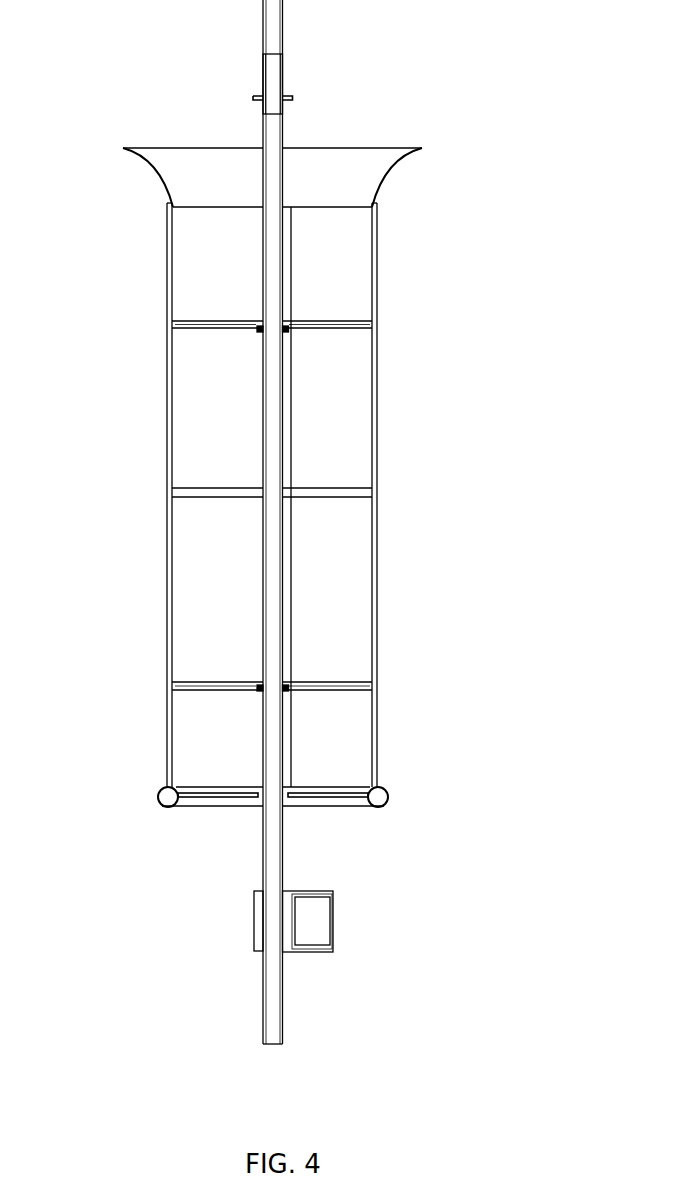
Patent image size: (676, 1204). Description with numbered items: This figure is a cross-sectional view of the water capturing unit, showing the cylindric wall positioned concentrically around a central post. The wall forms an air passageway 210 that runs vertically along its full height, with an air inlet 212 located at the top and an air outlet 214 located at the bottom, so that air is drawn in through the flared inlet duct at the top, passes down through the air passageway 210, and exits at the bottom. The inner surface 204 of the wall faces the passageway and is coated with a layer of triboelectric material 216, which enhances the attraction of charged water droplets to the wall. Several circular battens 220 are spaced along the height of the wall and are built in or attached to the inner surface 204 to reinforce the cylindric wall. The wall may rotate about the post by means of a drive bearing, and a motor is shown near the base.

The rotary shaft 204 is at (193, 412).
The frame assembly 210 is at (340, 433).
The hopper 212 is at (367, 153).
The base plate 214 is at (323, 813).
The support post 216 is at (172, 282).
The shelf 220 is at (367, 327).